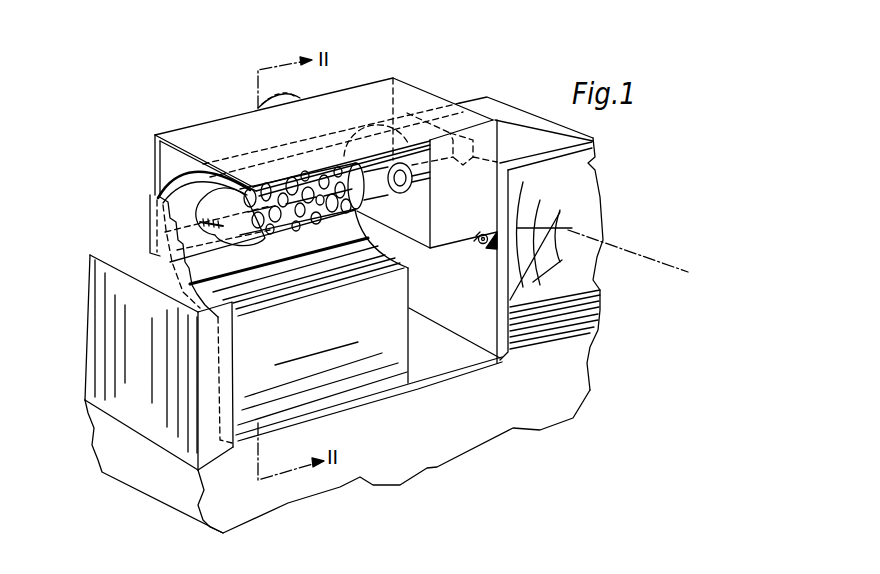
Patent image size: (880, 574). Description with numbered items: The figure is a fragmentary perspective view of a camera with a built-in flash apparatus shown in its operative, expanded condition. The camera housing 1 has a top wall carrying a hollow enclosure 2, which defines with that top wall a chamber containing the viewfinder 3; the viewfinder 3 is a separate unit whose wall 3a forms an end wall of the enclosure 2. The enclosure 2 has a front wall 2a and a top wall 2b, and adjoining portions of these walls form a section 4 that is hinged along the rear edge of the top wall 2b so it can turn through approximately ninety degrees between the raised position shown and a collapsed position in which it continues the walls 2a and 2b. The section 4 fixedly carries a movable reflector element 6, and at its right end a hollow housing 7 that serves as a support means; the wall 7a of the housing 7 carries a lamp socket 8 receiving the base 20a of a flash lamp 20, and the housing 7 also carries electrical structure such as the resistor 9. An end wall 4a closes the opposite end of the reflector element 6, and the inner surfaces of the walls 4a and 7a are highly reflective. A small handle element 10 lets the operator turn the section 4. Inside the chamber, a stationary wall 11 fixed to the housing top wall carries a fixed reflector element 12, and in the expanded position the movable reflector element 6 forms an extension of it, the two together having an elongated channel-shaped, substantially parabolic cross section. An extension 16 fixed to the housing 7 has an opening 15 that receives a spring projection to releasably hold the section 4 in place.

The camera housing 1 is at (289, 503).
The hollow enclosure 2 is at (101, 300).
The front wall 2a is at (207, 416).
The top wall 2b is at (128, 257).
The viewfinder 3 is at (573, 192).
The wall 3a is at (476, 305).
The section 4 is at (245, 117).
The end wall 4a is at (162, 233).
The movable reflector element 6 is at (178, 192).
The hollow housing 7 is at (440, 237).
The wall 7a is at (413, 228).
The lamp socket 8 is at (407, 185).
The resistor 9 is at (480, 123).
The handle element 10 is at (284, 99).
The stationary wall 11 is at (388, 335).
The fixed reflector element 12 is at (386, 271).
The opening 15 is at (481, 235).
The extension 16 is at (484, 243).
The flash lamp 20 is at (262, 205).
The base 20a is at (373, 197).